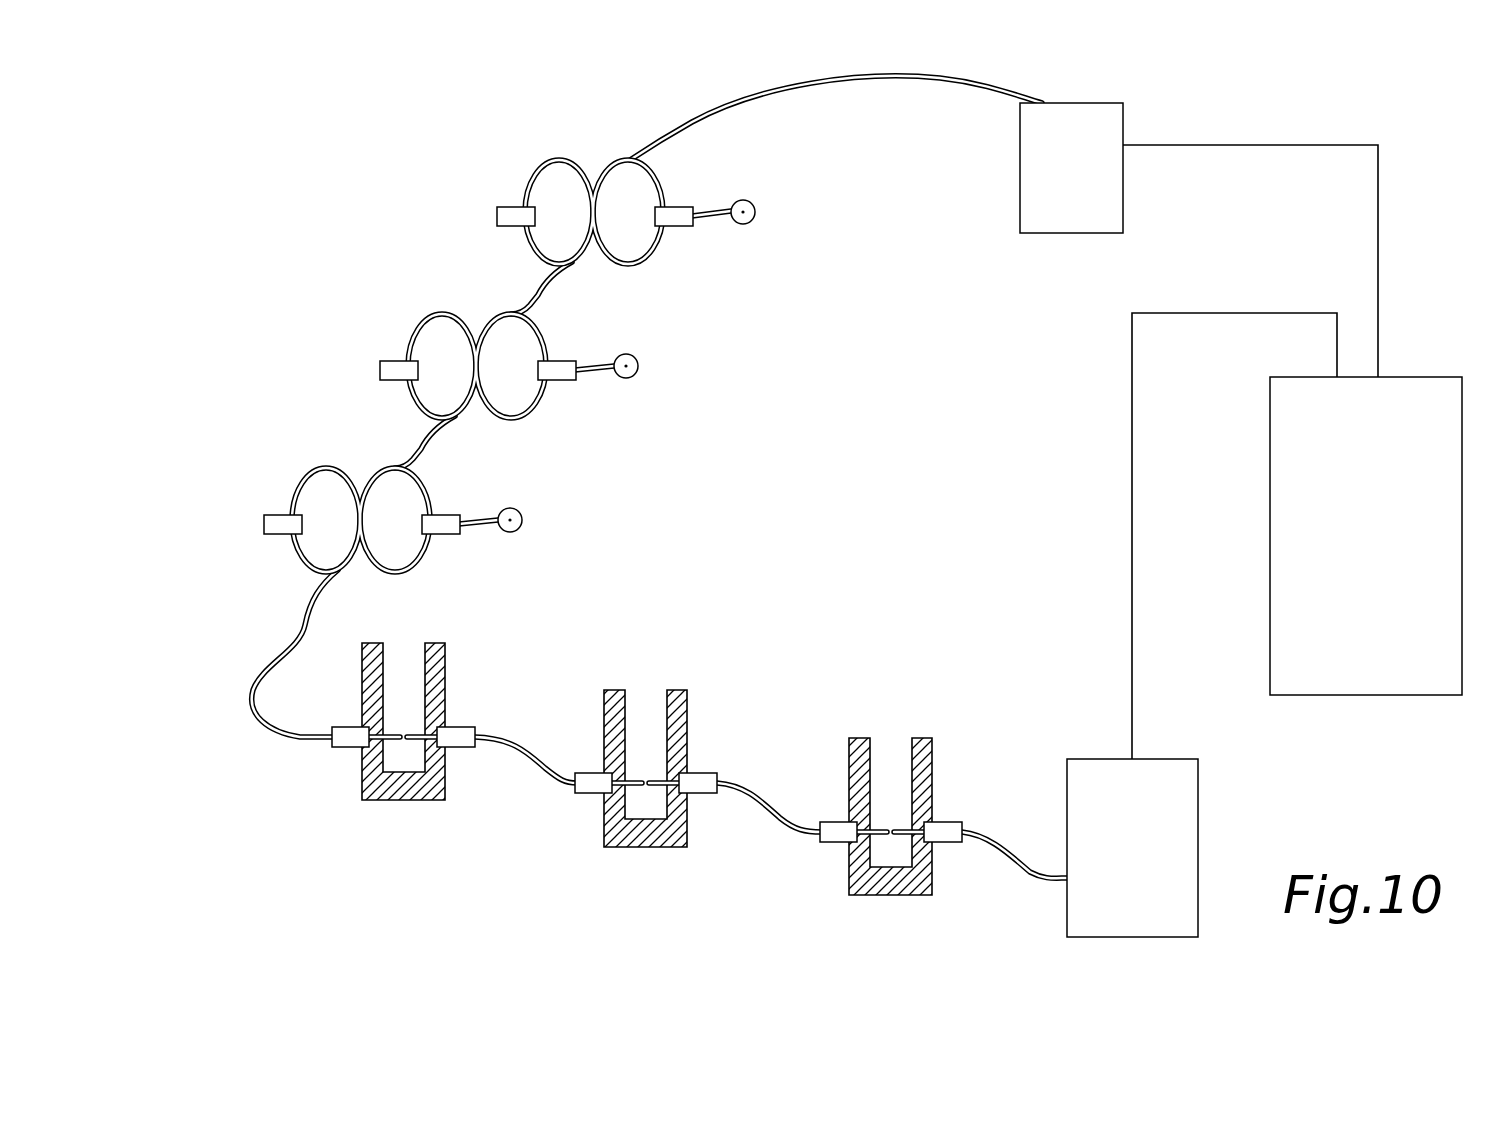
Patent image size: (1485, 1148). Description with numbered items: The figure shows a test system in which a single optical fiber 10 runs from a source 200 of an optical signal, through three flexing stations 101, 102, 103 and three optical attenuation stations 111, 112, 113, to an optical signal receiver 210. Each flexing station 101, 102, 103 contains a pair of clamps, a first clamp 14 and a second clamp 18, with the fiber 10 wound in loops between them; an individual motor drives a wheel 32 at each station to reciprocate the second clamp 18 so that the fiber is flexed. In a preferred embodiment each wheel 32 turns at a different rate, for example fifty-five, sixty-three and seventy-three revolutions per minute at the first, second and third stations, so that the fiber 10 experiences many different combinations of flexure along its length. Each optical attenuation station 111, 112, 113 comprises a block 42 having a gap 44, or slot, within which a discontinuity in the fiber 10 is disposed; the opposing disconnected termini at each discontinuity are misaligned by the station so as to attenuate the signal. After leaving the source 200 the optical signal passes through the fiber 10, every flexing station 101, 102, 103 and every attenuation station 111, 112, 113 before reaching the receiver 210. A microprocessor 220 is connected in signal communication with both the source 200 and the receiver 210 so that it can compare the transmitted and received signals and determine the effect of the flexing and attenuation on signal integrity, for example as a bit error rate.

The optical fiber 10 is at (882, 86).
The input connector 14 is at (497, 216).
The second clamp 18 is at (672, 224).
The wheel 32 is at (755, 203).
The block 42 is at (420, 790).
The gap 44 is at (400, 660).
The flexing station 101 is at (553, 185).
The second flexing station 102 is at (428, 342).
The third flexing station 103 is at (316, 490).
The optical attenuation station 111 is at (365, 801).
The optical attenuation station 112 is at (612, 848).
The optical attenuation station 113 is at (860, 896).
The source 200 is at (1068, 236).
The optical signal receiver 210 is at (1104, 765).
The microprocessor 220 is at (1368, 695).